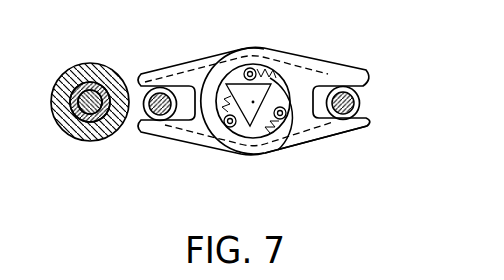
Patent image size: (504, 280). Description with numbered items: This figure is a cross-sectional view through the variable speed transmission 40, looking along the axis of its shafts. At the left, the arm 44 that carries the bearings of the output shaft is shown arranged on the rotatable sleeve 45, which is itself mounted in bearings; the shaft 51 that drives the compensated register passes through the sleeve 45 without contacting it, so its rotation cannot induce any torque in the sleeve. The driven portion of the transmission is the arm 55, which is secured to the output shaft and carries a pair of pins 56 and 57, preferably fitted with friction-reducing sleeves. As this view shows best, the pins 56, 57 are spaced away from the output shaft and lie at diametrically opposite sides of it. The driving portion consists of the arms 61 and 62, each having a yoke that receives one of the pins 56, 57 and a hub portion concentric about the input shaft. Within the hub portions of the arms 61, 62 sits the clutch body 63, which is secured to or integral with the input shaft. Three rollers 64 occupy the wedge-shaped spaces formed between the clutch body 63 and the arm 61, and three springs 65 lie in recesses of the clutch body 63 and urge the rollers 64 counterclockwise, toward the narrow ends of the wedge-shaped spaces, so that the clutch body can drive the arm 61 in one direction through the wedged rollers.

The variable speed transmission 40 is at (236, 100).
The arm 44 is at (66, 129).
The rotatable sleeve 45 is at (79, 100).
The shaft 51 is at (82, 84).
The arm 55 is at (334, 80).
The pin 56 is at (361, 101).
The pin 57 is at (144, 98).
The arm 61 is at (336, 134).
The arm 62 is at (222, 50).
The clutch body 63 is at (254, 114).
The rollers 64 is at (256, 70).
The springs 65 is at (272, 77).